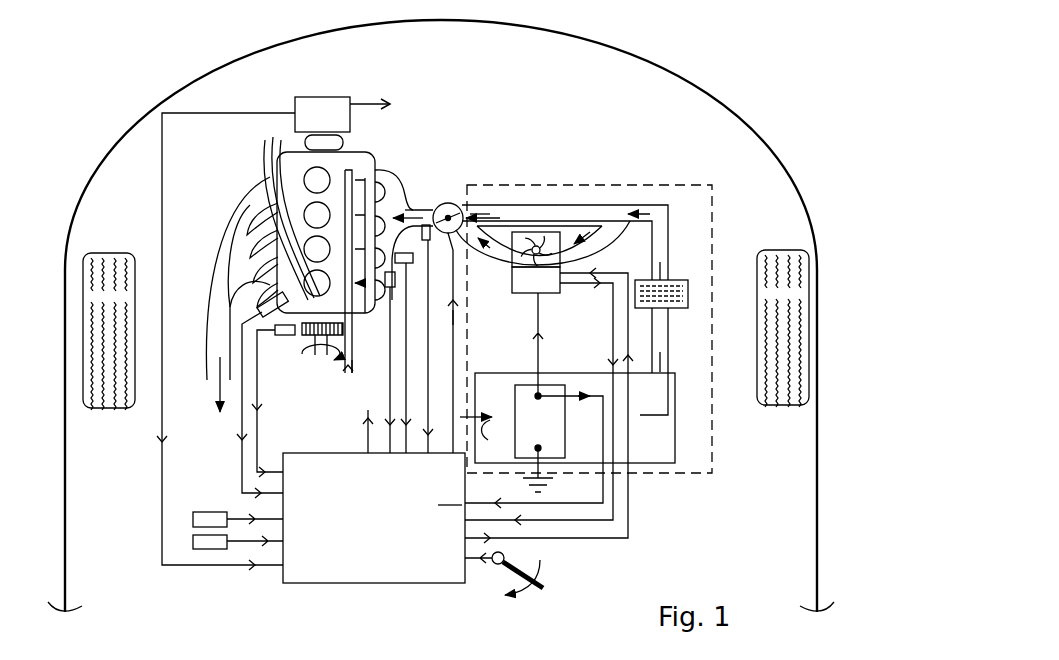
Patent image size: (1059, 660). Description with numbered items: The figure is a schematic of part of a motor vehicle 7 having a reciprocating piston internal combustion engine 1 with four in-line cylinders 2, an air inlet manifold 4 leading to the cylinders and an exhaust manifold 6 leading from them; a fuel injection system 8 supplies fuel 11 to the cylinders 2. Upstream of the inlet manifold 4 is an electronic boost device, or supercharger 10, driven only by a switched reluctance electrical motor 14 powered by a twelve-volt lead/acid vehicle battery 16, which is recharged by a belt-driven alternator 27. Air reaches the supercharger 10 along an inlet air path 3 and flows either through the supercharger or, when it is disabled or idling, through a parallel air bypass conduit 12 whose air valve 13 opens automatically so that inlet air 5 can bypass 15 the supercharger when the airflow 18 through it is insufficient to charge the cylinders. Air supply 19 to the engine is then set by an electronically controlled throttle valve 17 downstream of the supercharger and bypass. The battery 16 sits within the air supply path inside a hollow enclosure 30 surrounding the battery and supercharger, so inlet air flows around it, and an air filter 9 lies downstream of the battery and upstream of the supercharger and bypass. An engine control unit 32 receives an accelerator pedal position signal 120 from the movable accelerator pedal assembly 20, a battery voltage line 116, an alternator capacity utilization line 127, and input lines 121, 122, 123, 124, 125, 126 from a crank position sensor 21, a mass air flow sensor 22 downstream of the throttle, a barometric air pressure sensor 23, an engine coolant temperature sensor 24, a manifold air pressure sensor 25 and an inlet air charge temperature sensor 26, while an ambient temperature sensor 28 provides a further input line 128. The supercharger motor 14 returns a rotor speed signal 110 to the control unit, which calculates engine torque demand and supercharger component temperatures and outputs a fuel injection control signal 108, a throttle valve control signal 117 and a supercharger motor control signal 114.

The internal combustion engine 1 is at (248, 180).
The cylinders 2 is at (283, 218).
The inlet air path 3 is at (668, 205).
The air inlet manifold 4 is at (392, 176).
The inlet air 5 is at (728, 362).
The exhaust manifold 6 is at (227, 232).
The motor vehicle 7 is at (140, 102).
The fuel injection system 8 is at (340, 166).
The air filter 9 is at (688, 294).
The electronic boost device (supercharger) 10 is at (528, 231).
The fuel 11 is at (374, 372).
The air bypass conduit 12 is at (553, 210).
The air valve 13 is at (586, 223).
The switched reluctance electrical motor 14 is at (560, 291).
The bypass 15 is at (493, 205).
The vehicle battery 16 is at (555, 427).
The electronically controlled throttle valve 17 is at (452, 203).
The airflow 18 is at (600, 247).
The air supply 19 is at (413, 210).
The accelerator pedal assembly 20 is at (520, 553).
The crank position sensor 21 is at (285, 336).
The mass air flow sensor 22 is at (427, 225).
The barometric air pressure sensor 23 is at (193, 518).
The engine coolant temperature sensor 24 is at (260, 300).
The manifold air pressure sensor 25 is at (395, 280).
The inlet air charge temperature sensor 26 is at (413, 258).
The belt-driven alternator 27 is at (324, 96).
The ambient temperature sensor 28 is at (211, 549).
The hollow enclosure 30 is at (712, 473).
The engine control unit 32 is at (388, 584).
The fuel injection control signal 108 is at (368, 436).
The rotor speed signal 110 is at (607, 520).
The supercharger motor control signal 114 is at (628, 528).
The battery supply input line 116 is at (603, 492).
The throttle valve control signal 117 is at (455, 353).
The accelerator pedal position signal 120 is at (467, 562).
The crank position input line 121 is at (261, 448).
The mass air flow input line 122 is at (453, 318).
The barometric air pressure input line 123 is at (250, 518).
The engine coolant temperature input line 124 is at (242, 453).
The manifold air pressure input line 125 is at (390, 408).
The inlet air charge temperature input line 126 is at (406, 388).
The alternator input line 127 is at (172, 568).
The ambient temperature input line 128 is at (240, 542).